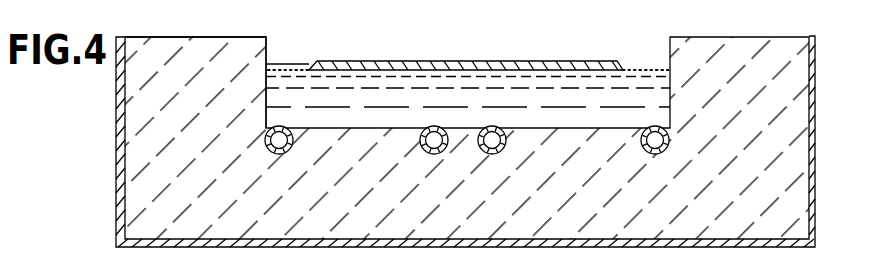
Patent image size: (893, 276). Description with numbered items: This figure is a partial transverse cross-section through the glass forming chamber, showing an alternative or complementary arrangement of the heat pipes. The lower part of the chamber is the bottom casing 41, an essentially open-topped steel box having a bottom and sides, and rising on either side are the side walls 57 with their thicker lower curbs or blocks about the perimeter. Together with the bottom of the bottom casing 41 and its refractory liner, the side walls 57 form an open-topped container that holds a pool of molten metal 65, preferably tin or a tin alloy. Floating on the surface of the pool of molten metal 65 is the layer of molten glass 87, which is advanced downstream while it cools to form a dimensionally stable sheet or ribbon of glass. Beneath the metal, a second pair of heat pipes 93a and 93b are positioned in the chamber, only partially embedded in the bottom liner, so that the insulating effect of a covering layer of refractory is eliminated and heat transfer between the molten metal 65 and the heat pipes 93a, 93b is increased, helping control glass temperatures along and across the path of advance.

The bottom casing 41 is at (812, 229).
The side walls 57 is at (232, 37).
The pool of molten metal 65 is at (652, 65).
The layer of molten glass 87 is at (466, 66).
The heat pipe 93a is at (433, 127).
The heat pipe 93b is at (499, 126).